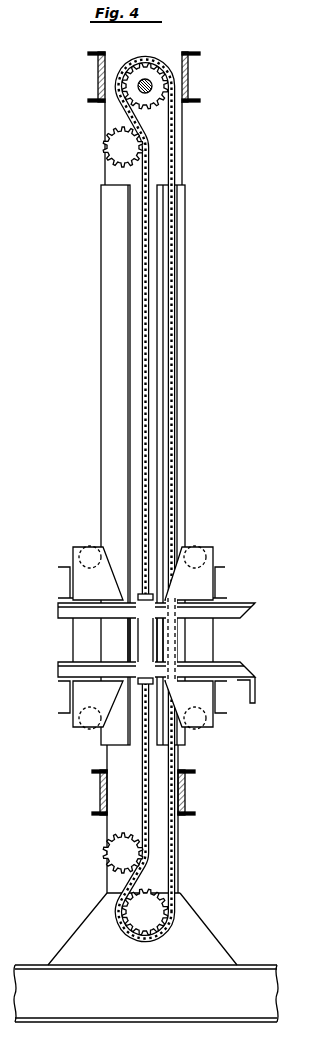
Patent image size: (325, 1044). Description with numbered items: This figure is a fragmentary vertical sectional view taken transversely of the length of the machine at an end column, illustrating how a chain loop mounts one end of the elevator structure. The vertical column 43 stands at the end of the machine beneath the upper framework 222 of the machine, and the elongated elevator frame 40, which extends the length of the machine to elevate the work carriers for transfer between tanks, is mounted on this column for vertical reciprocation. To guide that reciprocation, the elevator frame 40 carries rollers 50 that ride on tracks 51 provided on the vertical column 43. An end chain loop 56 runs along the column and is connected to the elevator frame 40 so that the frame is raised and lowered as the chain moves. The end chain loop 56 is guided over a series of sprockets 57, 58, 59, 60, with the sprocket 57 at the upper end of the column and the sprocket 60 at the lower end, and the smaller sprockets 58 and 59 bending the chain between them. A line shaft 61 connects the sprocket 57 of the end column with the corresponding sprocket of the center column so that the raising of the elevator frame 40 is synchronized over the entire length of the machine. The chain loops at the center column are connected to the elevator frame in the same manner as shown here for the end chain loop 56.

The upper framework 222 is at (98, 72).
The line shaft 61 is at (151, 85).
The sprocket 57 is at (162, 100).
The sprocket 58 is at (115, 152).
The vertical column 43 is at (104, 319).
The end chain loop 56 is at (172, 333).
The track 51 is at (178, 438).
The roller 50 is at (193, 553).
The elevator frame 40 is at (215, 645).
The sprocket 59 is at (110, 861).
The sprocket 60 is at (157, 910).